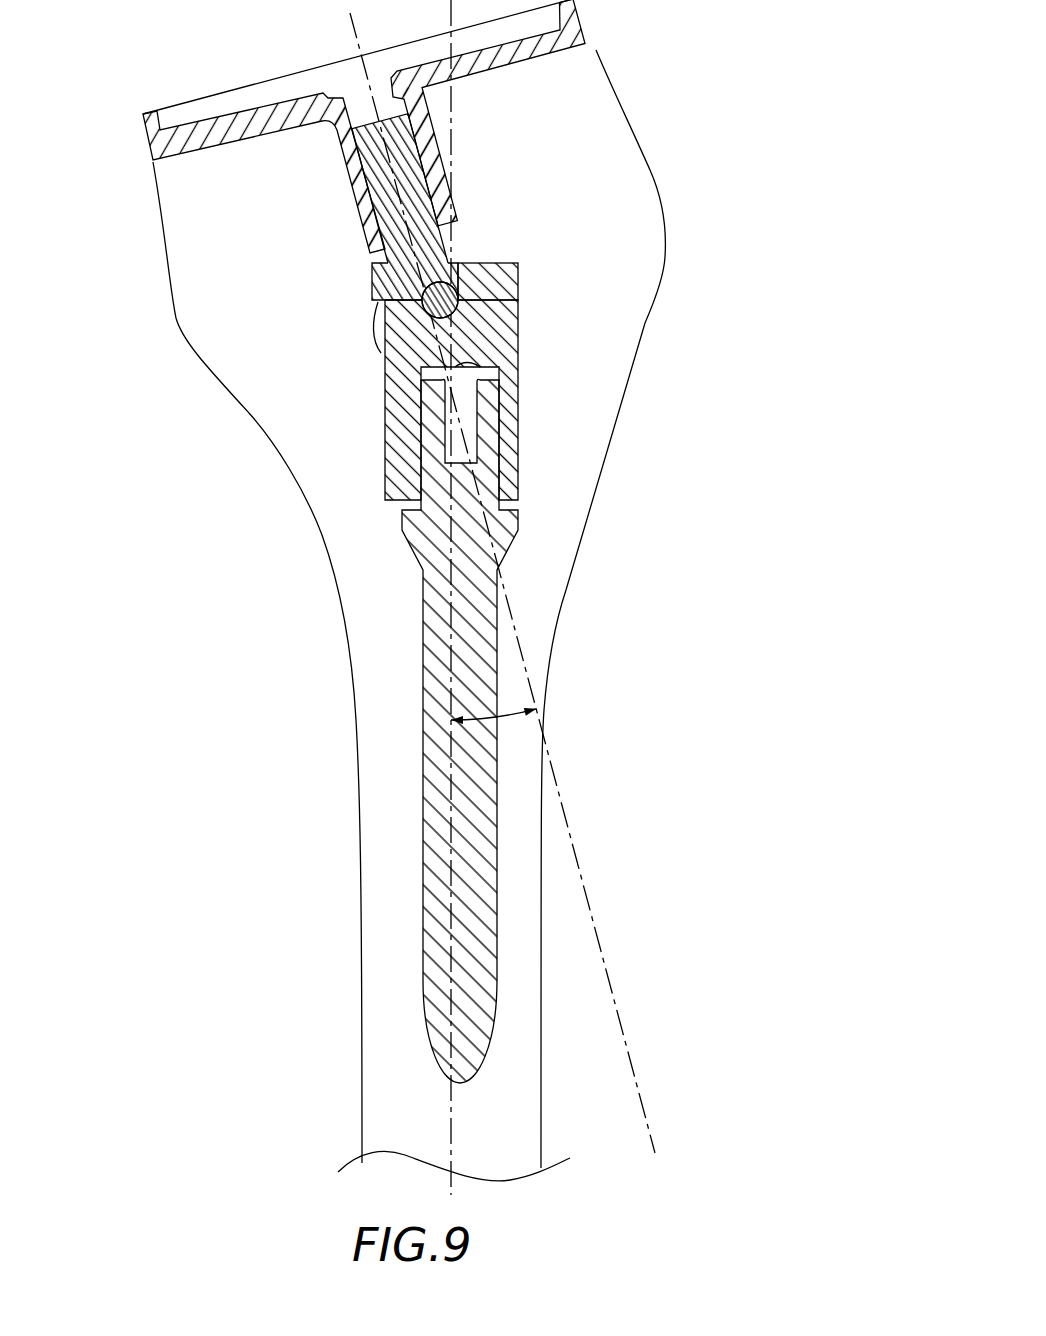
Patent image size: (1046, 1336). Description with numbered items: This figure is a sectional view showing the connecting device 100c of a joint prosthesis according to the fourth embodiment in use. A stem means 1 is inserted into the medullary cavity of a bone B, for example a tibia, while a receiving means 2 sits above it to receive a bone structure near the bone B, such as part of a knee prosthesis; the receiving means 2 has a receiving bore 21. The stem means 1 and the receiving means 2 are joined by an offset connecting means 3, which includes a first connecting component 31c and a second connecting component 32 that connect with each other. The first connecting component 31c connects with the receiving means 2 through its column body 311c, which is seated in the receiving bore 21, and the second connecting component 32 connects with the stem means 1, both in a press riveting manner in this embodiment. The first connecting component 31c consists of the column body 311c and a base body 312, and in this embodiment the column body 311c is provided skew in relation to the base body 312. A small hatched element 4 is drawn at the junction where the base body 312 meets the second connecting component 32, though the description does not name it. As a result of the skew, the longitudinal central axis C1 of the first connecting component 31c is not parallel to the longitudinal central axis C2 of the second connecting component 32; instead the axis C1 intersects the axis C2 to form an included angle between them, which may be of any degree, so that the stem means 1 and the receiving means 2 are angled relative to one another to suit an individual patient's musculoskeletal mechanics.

The connecting device 100c is at (737, 71).
The receiving means 2 is at (327, 126).
The receiving bore 21 is at (340, 148).
The offset connecting means 3 is at (426, 307).
The first connecting component 31c is at (350, 207).
The column body 311c is at (350, 186).
The base body 312 is at (505, 262).
The second connecting component 32 is at (519, 357).
The locking ball 4 is at (438, 318).
The stem means 1 is at (478, 1002).
The bone B is at (642, 222).
The longitudinal central axis of the first connecting component C1 is at (621, 1017).
The longitudinal central axis of the second connecting component C2 is at (450, 1118).